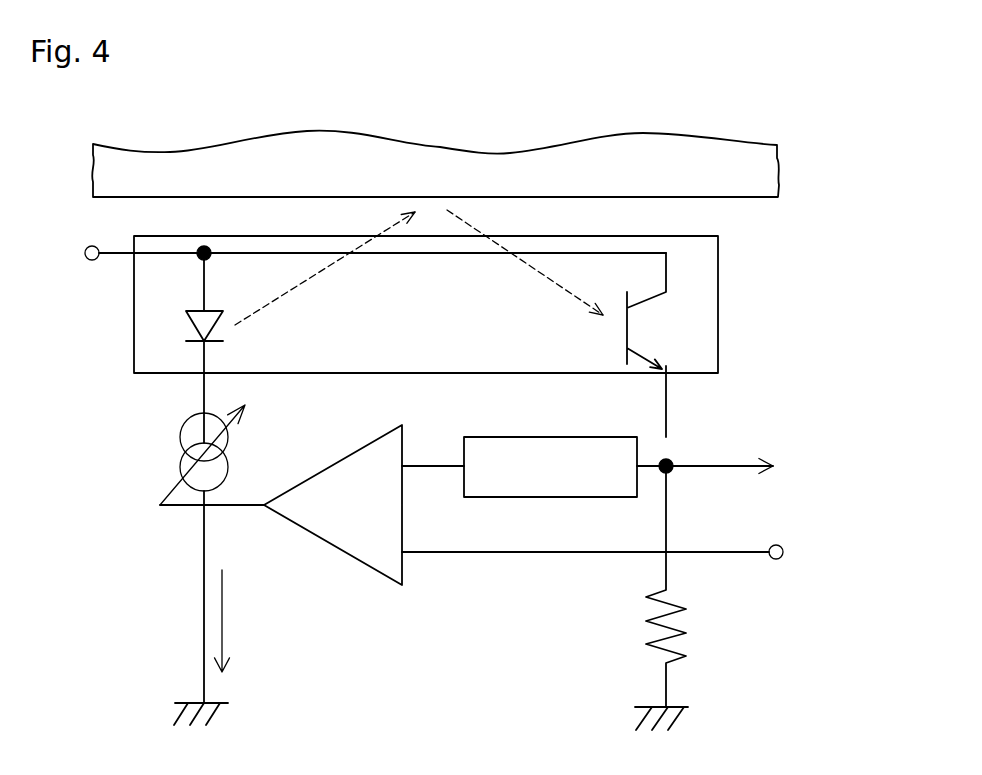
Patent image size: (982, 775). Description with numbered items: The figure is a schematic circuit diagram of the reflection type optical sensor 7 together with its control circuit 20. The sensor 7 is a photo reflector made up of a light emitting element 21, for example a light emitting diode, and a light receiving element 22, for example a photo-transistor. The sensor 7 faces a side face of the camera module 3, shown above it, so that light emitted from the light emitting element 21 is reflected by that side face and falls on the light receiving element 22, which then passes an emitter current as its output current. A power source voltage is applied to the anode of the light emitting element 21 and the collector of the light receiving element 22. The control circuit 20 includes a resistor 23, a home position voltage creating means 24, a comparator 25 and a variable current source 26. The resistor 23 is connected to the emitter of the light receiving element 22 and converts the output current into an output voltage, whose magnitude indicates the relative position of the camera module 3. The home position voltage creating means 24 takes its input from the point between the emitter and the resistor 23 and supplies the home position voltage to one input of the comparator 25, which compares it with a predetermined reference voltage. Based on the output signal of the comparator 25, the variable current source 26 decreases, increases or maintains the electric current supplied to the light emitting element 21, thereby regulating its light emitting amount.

The camera module 3 is at (753, 199).
The reflection type optical sensor 7 is at (718, 357).
The control circuit 20 is at (447, 620).
The light emitting element 21 is at (150, 332).
The light receiving element 22 is at (708, 330).
The resistor 23 is at (726, 633).
The home position voltage creating means 24 is at (518, 497).
The comparator 25 is at (345, 557).
The variable current source 26 is at (142, 454).